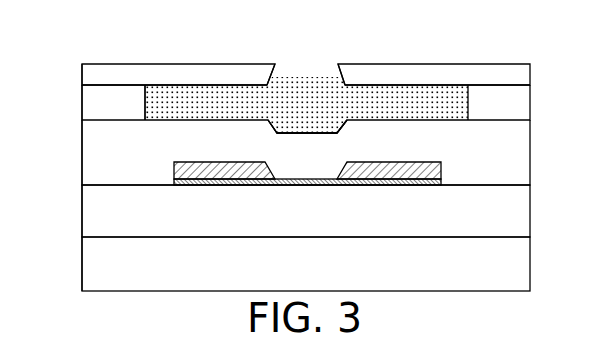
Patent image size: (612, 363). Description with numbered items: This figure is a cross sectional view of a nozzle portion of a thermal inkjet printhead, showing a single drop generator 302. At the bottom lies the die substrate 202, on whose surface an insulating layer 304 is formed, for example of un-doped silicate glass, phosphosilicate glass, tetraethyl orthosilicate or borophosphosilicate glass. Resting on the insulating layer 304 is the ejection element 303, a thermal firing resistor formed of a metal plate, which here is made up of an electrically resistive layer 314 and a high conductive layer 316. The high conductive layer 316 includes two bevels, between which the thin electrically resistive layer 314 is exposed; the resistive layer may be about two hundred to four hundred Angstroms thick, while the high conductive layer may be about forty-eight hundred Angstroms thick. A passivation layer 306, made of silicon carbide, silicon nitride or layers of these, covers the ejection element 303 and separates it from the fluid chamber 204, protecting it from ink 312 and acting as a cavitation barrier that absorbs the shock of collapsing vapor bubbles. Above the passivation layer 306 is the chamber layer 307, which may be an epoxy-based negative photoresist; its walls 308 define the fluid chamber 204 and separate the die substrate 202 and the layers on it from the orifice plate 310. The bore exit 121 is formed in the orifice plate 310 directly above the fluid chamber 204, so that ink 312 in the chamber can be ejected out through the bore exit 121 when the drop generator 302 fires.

The die substrate 202 is at (530, 263).
The insulating layer 304 is at (528, 212).
The passivation layer 306 is at (528, 160).
The electrically resistive layer 314 is at (180, 185).
The high conductive layer 316 is at (430, 162).
The walls 308 is at (522, 107).
The ink 312 is at (413, 92).
The fluid chamber 204 is at (177, 119).
The orifice plate 310 is at (513, 63).
The chamber layer 307 is at (80, 105).
The bore exit 121 is at (326, 59).
The drop generator 302 is at (307, 173).
The ejection element 303 is at (307, 173).